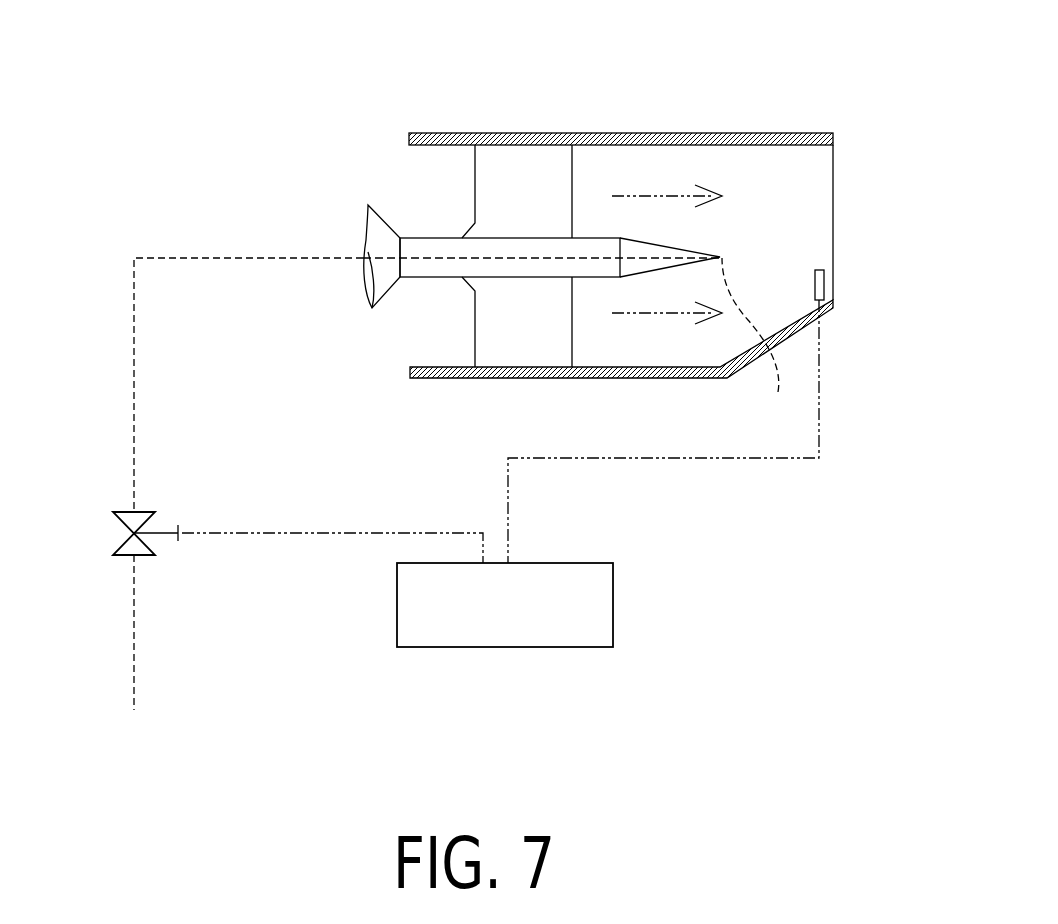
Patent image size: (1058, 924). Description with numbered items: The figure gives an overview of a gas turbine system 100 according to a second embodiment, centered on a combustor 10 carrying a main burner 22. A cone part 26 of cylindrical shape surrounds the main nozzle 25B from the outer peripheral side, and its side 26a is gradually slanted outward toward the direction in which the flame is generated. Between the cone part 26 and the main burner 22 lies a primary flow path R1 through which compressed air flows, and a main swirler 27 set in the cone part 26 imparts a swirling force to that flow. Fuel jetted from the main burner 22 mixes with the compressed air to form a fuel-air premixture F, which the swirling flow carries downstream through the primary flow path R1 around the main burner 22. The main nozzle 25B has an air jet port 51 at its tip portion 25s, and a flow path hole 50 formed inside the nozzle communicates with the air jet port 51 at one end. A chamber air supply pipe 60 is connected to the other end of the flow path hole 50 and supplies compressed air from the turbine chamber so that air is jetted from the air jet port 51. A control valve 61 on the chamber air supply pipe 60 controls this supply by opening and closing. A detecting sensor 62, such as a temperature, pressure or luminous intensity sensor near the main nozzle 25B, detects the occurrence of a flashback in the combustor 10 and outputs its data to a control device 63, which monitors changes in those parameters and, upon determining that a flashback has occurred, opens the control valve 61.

The gas turbine system 100 is at (352, 130).
The combustor 10 is at (636, 94).
The main burner 22 is at (374, 205).
The cone part 26 is at (773, 133).
The side of the cone part 26a is at (793, 337).
The main swirler 27 is at (477, 176).
The primary flow path R1 is at (442, 330).
The flow path hole 50 is at (537, 258).
The main nozzle 25B is at (600, 238).
The tip portion 25s is at (726, 258).
The air jet port 51 is at (757, 348).
The fuel-air premixture F is at (672, 192).
The detecting sensor 62 is at (825, 281).
The chamber air supply pipe 60 is at (232, 258).
The control valve 61 is at (137, 512).
The control device 63 is at (613, 608).